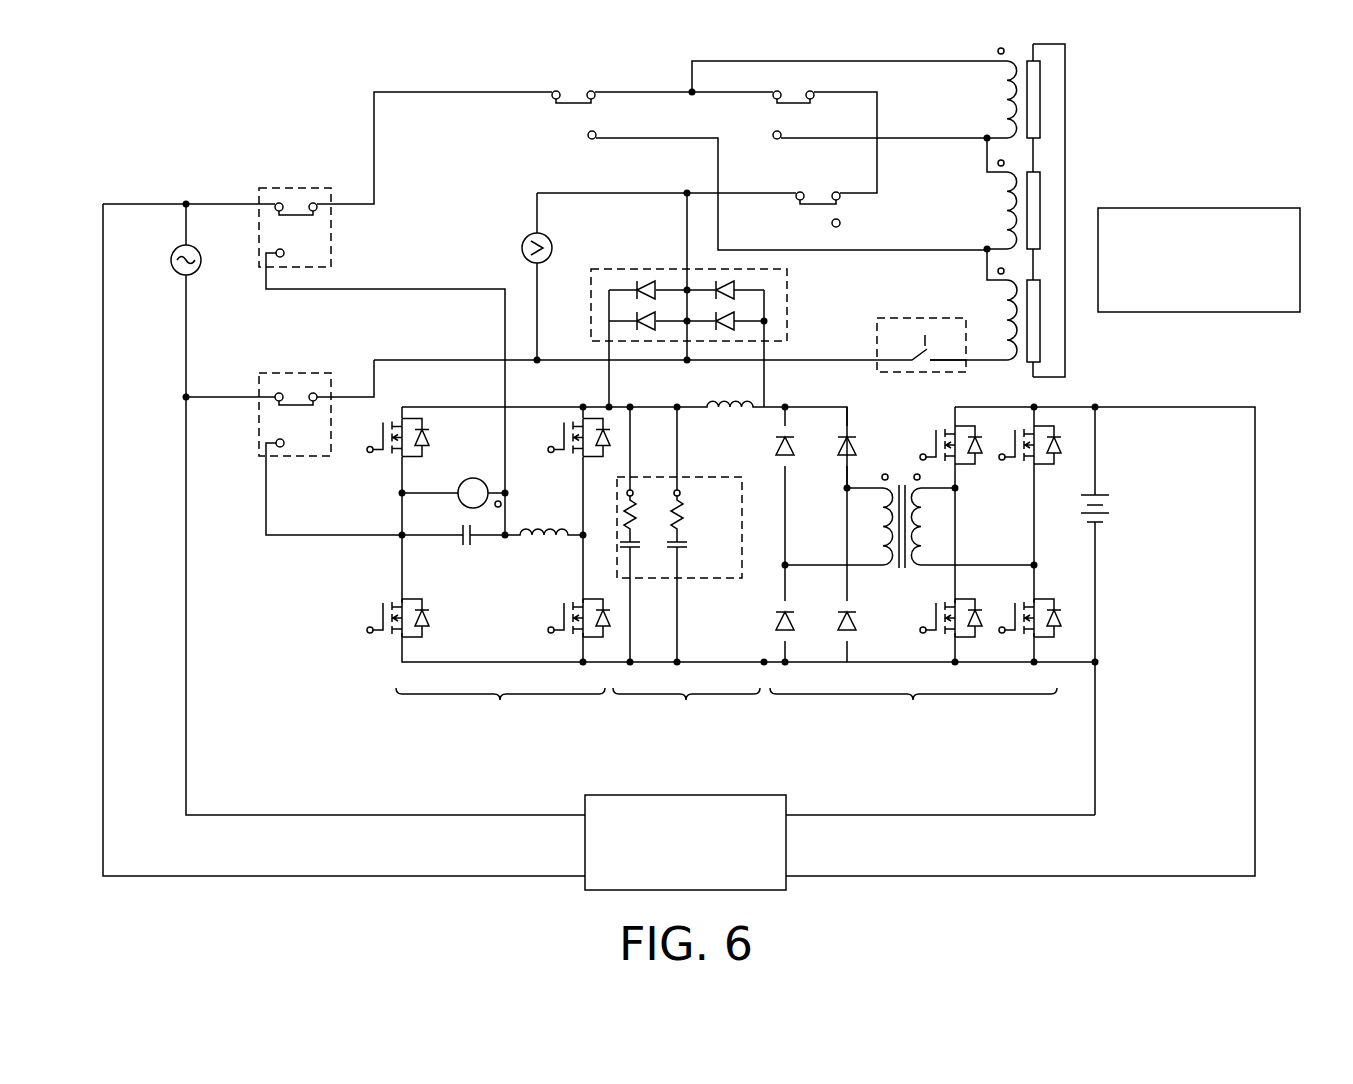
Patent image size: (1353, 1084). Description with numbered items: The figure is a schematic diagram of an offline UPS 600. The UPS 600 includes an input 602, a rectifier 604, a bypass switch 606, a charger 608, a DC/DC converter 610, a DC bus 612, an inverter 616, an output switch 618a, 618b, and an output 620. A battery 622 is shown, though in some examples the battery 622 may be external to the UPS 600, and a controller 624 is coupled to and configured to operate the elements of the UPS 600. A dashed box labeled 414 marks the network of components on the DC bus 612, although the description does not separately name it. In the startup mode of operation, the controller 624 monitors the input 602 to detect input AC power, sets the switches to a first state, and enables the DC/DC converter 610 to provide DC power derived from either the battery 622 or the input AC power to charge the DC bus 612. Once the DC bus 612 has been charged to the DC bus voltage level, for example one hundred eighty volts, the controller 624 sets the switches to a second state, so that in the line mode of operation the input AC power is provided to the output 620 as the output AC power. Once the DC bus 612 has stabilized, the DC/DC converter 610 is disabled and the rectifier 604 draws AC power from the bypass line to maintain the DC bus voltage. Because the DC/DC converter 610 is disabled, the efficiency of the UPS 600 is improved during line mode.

The UPS 600 is at (1130, 112).
The input 602 is at (193, 251).
The rectifier 604 is at (788, 302).
The bypass switch 606 is at (921, 356).
The charger 608 is at (685, 842).
The DC/DC converter 610 is at (932, 584).
The DC bus 612 is at (728, 577).
The inverter 616 is at (731, 585).
The output switch 618a is at (293, 187).
The output switch 618b is at (295, 369).
The output 620 is at (547, 228).
The battery 622 is at (1127, 611).
The controller 624 is at (1199, 260).
The RC snubber network 414 is at (679, 543).